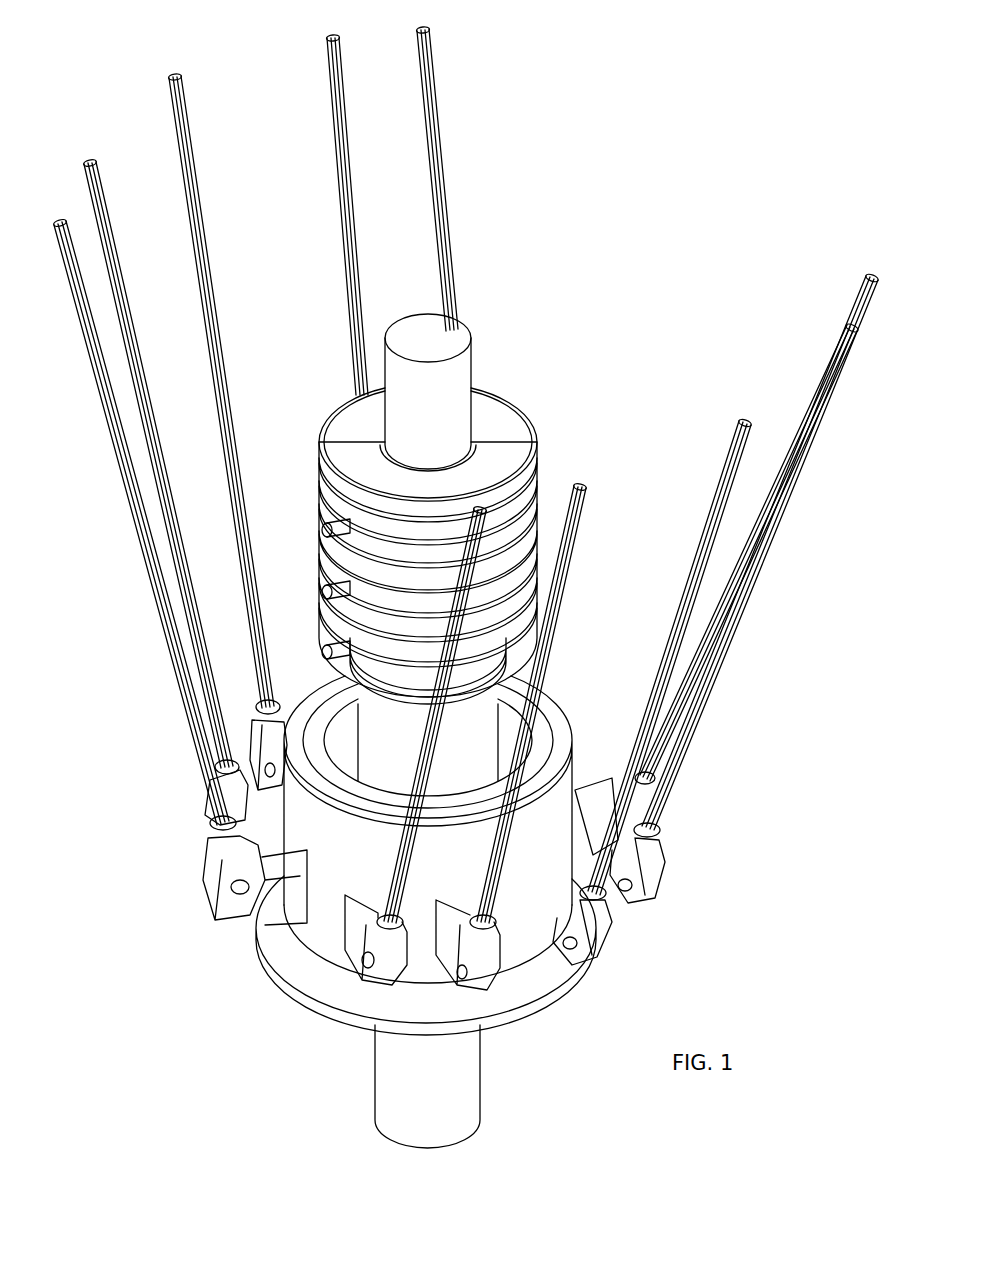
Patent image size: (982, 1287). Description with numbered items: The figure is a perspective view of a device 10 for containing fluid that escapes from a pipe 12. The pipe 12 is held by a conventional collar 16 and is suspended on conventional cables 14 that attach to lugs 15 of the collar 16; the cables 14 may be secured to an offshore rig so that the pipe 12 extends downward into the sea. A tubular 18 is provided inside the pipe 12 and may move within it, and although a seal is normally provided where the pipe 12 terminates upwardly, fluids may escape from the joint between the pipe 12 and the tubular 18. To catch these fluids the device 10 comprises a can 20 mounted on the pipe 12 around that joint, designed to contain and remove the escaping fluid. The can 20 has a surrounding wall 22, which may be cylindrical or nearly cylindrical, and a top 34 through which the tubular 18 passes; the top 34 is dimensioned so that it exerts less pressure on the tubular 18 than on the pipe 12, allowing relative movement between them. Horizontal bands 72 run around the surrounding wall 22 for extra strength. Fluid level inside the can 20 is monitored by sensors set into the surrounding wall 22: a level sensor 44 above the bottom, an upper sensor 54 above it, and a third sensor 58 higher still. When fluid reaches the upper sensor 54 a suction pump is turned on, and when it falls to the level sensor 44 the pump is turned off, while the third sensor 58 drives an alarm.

The device 10 is at (724, 188).
The pipe 12 is at (465, 1102).
The cables 14 is at (442, 142).
The lugs 15 is at (277, 905).
The collar 16 is at (330, 930).
The tubular 18 is at (465, 368).
The can 20 is at (576, 455).
The surrounding wall 22 is at (540, 420).
The top 34 is at (352, 418).
The level sensor 44 is at (324, 652).
The upper sensor 54 is at (322, 590).
The third sensor 58 is at (322, 525).
The horizontal bands 72 is at (530, 545).